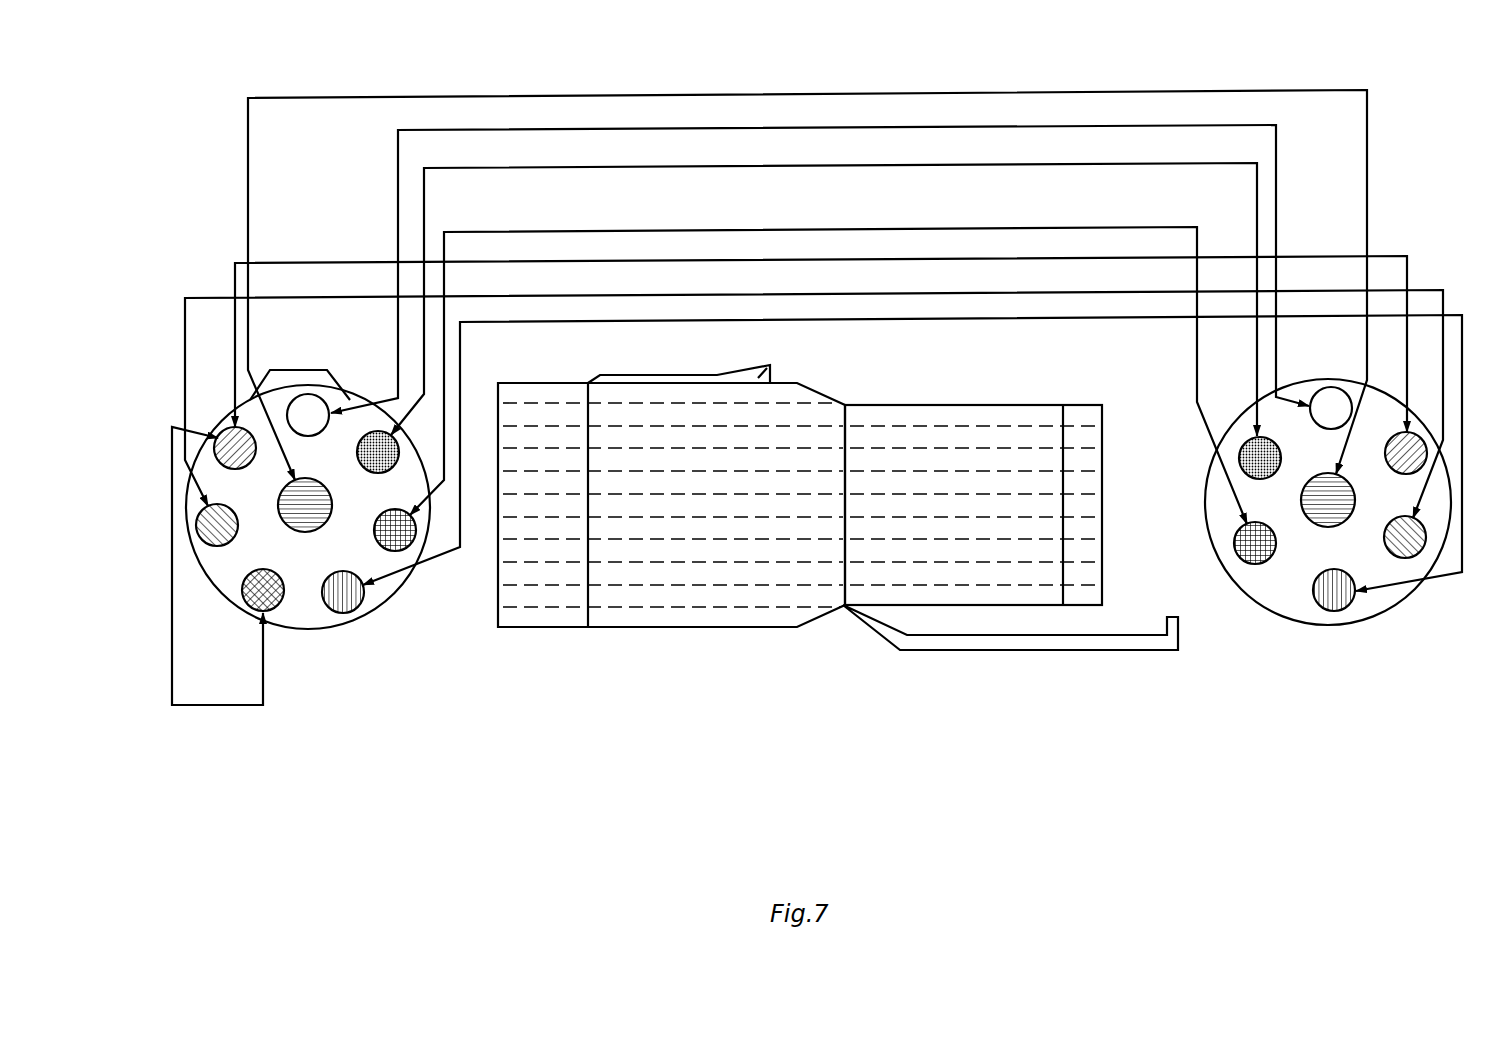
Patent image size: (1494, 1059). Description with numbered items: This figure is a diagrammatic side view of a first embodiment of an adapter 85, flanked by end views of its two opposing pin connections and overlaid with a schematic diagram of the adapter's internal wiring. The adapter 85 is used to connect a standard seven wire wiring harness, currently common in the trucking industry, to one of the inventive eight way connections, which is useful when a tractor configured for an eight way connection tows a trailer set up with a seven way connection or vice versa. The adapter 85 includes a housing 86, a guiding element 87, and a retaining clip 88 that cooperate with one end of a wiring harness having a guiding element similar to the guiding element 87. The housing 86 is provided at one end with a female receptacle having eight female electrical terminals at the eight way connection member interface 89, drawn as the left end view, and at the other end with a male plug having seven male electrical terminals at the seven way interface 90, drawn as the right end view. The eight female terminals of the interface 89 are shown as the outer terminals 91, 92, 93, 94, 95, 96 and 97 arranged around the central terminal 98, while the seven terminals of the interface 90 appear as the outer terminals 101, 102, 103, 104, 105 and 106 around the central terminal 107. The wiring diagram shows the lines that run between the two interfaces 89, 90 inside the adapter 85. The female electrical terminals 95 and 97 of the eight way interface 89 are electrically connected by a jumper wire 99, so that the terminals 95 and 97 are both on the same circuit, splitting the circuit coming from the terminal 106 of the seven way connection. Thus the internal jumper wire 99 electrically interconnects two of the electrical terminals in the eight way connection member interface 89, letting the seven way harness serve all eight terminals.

The adapter 85 is at (974, 579).
The housing 86 is at (673, 627).
The guiding element 87 is at (305, 385).
The retaining clip 88 is at (1027, 645).
The eight way connection member interface 89 is at (336, 630).
The seven way connection interface 90 is at (1106, 484).
The first connector pin 91 is at (303, 434).
The first connector pin 92 is at (382, 473).
The first connector pin 93 is at (386, 546).
The first connector pin 94 is at (333, 609).
The female electrical terminal 95 is at (271, 569).
The first connector pin 96 is at (268, 498).
The female electrical terminal 97 is at (216, 434).
The first connector center pin 98 is at (282, 510).
The jumper wire 99 is at (228, 705).
The second connector pin 101 is at (1335, 388).
The second connector pin 102 is at (1243, 440).
The second connector pin 103 is at (1235, 540).
The second connector pin 104 is at (1343, 610).
The second connector pin 105 is at (1390, 532).
The terminal of the seven way connection 106 is at (1387, 464).
The second connector center pin 107 is at (1305, 497).